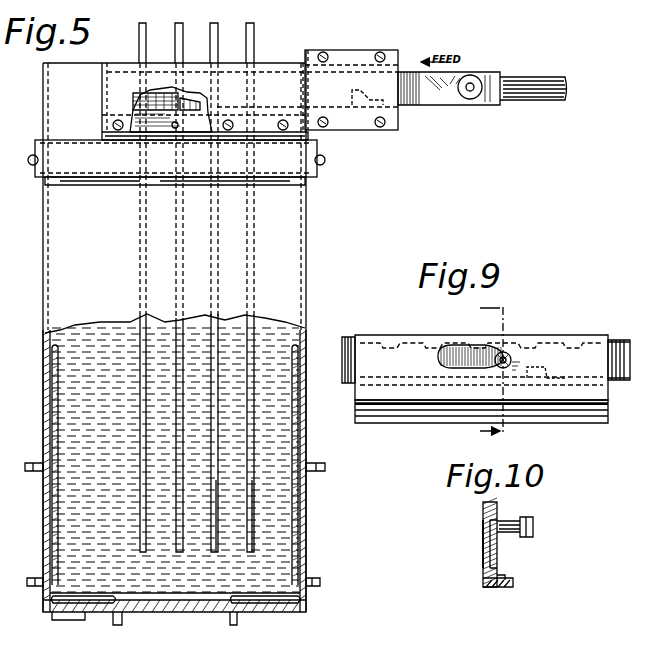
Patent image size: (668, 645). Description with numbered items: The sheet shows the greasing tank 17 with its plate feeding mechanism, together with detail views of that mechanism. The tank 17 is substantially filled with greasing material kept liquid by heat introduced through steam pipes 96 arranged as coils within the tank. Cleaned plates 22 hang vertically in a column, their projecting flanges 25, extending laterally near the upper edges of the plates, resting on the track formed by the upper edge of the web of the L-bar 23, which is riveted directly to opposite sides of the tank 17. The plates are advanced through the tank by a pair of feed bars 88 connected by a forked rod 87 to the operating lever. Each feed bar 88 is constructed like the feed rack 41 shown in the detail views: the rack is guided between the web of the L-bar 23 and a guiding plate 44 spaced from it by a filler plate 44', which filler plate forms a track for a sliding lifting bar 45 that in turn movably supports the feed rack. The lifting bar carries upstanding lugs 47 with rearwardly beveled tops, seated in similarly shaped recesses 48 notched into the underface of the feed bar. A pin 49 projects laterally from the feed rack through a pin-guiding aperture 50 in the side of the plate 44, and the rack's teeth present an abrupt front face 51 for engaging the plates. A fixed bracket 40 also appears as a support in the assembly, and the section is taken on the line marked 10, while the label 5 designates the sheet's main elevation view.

In FIG. 5, the tank 17 is at (60, 254).
In FIG. 5, the projecting flanges 25 is at (214, 34).
In FIG. 5, the feed bars 88 is at (448, 100).
In FIG. 5, the forked rod 87 is at (549, 95).
In FIG. 5, the steam pipes 96 is at (123, 630).
In FIG. 5, the plates 22 is at (256, 516).
In FIG. 9, the guiding plate 44 is at (461, 379).
In FIG. 10, the guiding plate 44 is at (523, 544).
In FIG. 9, the L-bar 23 is at (605, 405).
In FIG. 10, the L-bar 23 is at (485, 560).
In FIG. 9, the feed rack 41 is at (618, 347).
In FIG. 9, the sliding lifting bar 45 is at (612, 381).
In FIG. 10, the sliding lifting bar 45 is at (485, 548).
In FIG. 9, the pin-guiding aperture 50 is at (458, 345).
In FIG. 9, the pin 49 is at (495, 368).
In FIG. 10, the pin 49 is at (525, 513).
In FIG. 9, the abrupt front face 51 is at (507, 343).
In FIG. 9, the upstanding lugs 47 is at (538, 364).
In FIG. 9, the section line 5 is at (562, 368).
In FIG. 9, the recesses 48 is at (577, 368).
In FIG. 9, the section line 10- 10 is at (500, 369).
In FIG. 10, the fixed bracket 40 is at (493, 497).
In FIG. 10, the filler plate 44' is at (521, 576).